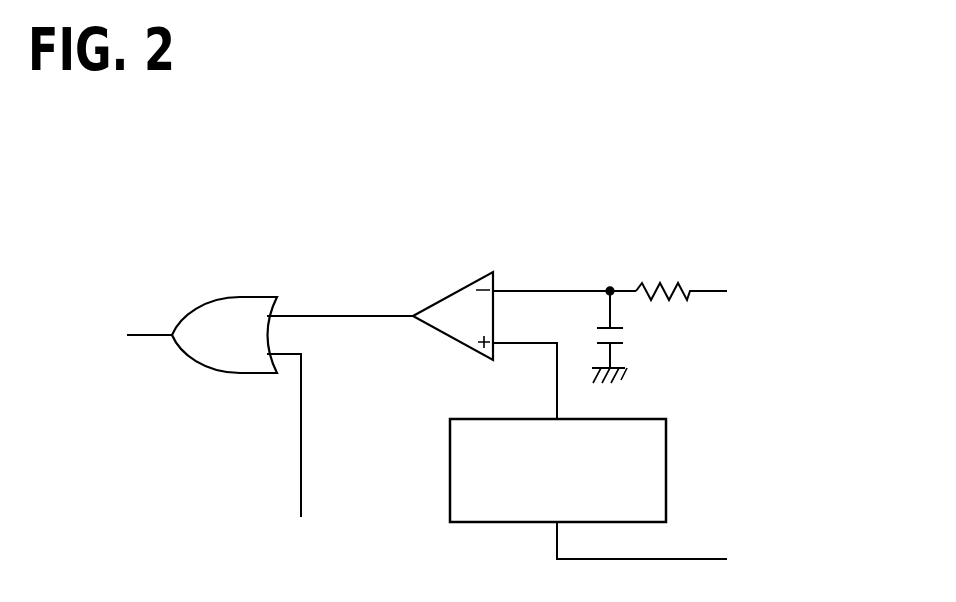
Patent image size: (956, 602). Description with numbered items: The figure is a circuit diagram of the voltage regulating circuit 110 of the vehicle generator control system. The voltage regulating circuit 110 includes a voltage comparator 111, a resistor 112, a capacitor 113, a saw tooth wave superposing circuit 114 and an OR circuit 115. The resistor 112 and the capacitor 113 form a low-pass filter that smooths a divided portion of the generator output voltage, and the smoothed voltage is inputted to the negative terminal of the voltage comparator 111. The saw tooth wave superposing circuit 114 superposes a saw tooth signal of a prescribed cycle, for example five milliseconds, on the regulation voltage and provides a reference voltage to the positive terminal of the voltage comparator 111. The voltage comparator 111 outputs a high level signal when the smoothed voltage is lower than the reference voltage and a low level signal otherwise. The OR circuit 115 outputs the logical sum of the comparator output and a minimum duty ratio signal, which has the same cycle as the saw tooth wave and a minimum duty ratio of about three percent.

The voltage regulating circuit 110 is at (507, 162).
The voltage comparator 111 is at (440, 295).
The resistor 112 is at (645, 283).
The capacitor 113 is at (623, 337).
The saw tooth wave superposing circuit 114 is at (667, 452).
The OR circuit 115 is at (238, 296).